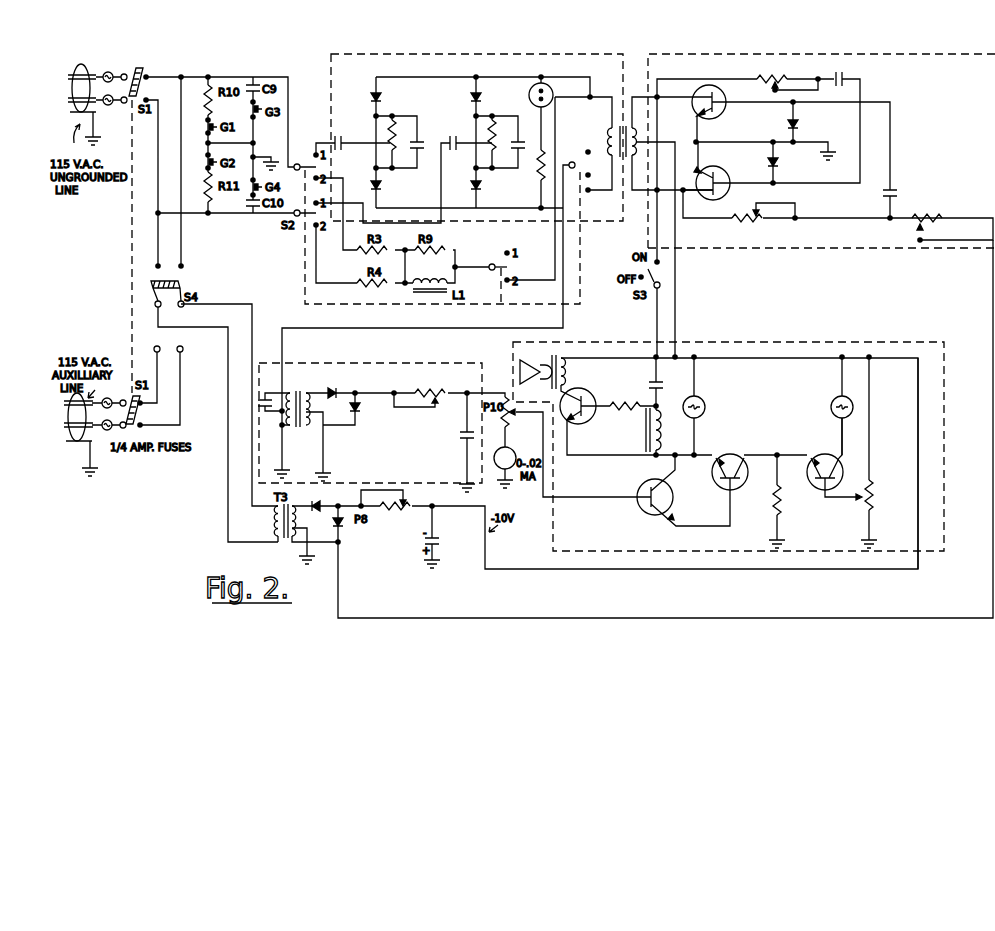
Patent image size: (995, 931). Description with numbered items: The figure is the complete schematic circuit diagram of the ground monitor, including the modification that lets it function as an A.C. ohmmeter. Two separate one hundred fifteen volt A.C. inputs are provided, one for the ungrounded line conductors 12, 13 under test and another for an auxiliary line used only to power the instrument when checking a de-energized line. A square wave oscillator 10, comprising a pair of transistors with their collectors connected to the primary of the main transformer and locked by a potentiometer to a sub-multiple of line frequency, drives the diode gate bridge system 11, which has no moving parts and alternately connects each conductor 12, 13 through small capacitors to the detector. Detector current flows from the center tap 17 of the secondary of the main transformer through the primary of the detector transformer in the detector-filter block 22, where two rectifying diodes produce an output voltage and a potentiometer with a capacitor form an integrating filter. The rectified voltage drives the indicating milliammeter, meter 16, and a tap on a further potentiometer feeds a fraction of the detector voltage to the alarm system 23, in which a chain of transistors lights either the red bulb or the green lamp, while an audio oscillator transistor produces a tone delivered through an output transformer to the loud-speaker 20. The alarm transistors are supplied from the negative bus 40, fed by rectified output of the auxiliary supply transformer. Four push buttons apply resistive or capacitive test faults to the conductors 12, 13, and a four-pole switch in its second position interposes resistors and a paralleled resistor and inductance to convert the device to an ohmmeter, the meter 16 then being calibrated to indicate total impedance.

The square wave oscillator 10 is at (920, 60).
The diode gate bridge system 11 is at (473, 46).
The conductor 12 is at (76, 72).
The conductor 13 is at (76, 98).
The meter 16 is at (511, 454).
The center tap 17 is at (610, 141).
The loud-speaker 20 is at (523, 368).
The detector-filter block 22 is at (399, 365).
The alarm system 23 is at (737, 350).
The negative bus 40 is at (749, 569).